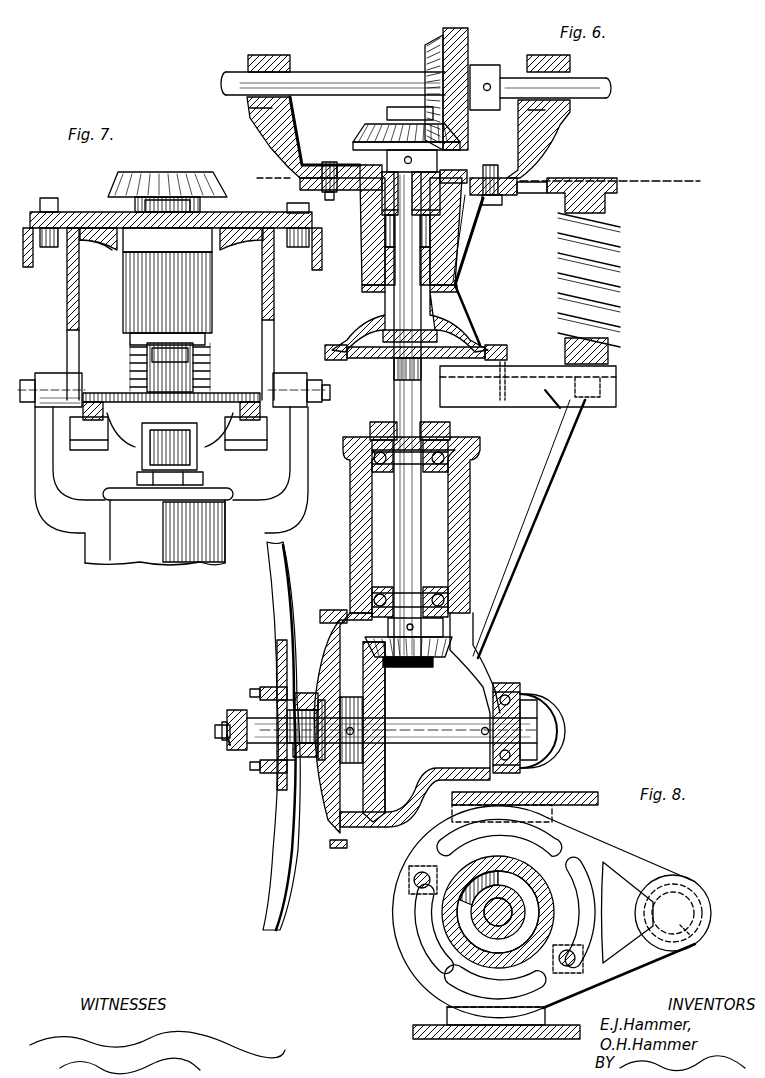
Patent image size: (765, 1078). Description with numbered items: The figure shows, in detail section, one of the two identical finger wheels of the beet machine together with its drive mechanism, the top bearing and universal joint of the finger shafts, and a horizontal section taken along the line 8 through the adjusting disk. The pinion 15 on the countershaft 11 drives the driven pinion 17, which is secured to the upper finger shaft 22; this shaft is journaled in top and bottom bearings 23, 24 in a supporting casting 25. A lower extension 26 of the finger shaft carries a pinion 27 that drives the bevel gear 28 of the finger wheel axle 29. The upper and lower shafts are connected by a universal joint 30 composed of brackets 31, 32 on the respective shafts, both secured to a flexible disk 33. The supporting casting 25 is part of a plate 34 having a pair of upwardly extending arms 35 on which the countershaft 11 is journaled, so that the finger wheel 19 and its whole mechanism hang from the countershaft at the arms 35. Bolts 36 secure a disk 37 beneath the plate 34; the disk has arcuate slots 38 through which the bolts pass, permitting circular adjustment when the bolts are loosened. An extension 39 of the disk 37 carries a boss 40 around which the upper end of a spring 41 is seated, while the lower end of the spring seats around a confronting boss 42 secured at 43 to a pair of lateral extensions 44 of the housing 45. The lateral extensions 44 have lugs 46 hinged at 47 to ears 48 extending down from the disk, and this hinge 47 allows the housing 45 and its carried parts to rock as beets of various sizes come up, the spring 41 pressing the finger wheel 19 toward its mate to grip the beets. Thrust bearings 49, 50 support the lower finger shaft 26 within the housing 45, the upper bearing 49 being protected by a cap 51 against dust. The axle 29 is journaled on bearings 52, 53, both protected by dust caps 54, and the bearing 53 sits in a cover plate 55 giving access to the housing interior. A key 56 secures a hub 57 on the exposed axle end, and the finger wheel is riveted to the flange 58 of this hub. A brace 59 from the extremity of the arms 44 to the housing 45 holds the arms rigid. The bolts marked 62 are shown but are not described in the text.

In FIG. 6, the section line 8— 8 is at (477, 180).
In FIG. 6, the countershaft 11 is at (322, 80).
In FIG. 6, the pinion 15 is at (455, 48).
In FIG. 6, the driven pinion 17 is at (368, 135).
In FIG. 7, the driven pinion 17 is at (158, 172).
In FIG. 6, the finger wheel 19 is at (268, 892).
In FIG. 6, the upper finger shaft 22 is at (365, 265).
In FIG. 8, the upper finger shaft 22 is at (480, 930).
In FIG. 6, the top bearing 23 is at (384, 210).
In FIG. 8, the top bearing 23 is at (490, 925).
In FIG. 7, the top bearing 23 is at (140, 205).
In FIG. 6, the bottom bearing 24 is at (385, 283).
In FIG. 6, the supporting casting 25 is at (450, 202).
In FIG. 8, the supporting casting 25 is at (470, 928).
In FIG. 7, the supporting casting 25 is at (135, 292).
In FIG. 6, the lower extension of the finger shaft 26 is at (392, 535).
In FIG. 6, the pinion 27 is at (455, 648).
In FIG. 6, the bevel gear 28 is at (362, 810).
In FIG. 6, the finger wheel axle 29 is at (420, 738).
In FIG. 6, the universal joint 30 is at (395, 345).
In FIG. 7, the universal joint 30 is at (222, 395).
In FIG. 6, the bracket 31 is at (370, 320).
In FIG. 7, the bracket 31 is at (132, 355).
In FIG. 6, the bracket 32 is at (393, 372).
In FIG. 7, the bracket 32 is at (143, 455).
In FIG. 6, the flexible disk 33 is at (383, 350).
In FIG. 7, the flexible disk 33 is at (125, 395).
In FIG. 6, the plate 34 is at (462, 178).
In FIG. 7, the plate 34 is at (90, 214).
In FIG. 6, the upwardly extending arms 35 is at (262, 128).
In FIG. 6, the bolts 36 is at (330, 162).
In FIG. 8, the bolts 36 is at (408, 878).
In FIG. 6, the disk 37 is at (302, 184).
In FIG. 8, the disk 37 is at (442, 930).
In FIG. 7, the disk 37 is at (80, 255).
In FIG. 8, the arcuate slots 38 is at (565, 905).
In FIG. 8, the extension of the disk 39 is at (640, 868).
In FIG. 6, the boss 40 is at (608, 204).
In FIG. 8, the boss 40 is at (708, 892).
In FIG. 6, the spring 41 is at (612, 283).
In FIG. 8, the spring 41 is at (708, 947).
In FIG. 7, the spring 41 is at (205, 350).
In FIG. 6, the confronting boss 42 is at (610, 345).
In FIG. 7, the confronting boss 42 is at (200, 370).
In FIG. 6, the securing point 43 is at (612, 400).
In FIG. 6, the lateral extensions 44 is at (555, 405).
In FIG. 7, the lateral extensions 44 is at (88, 445).
In FIG. 6, the housing 45 is at (468, 530).
In FIG. 7, the housing 45 is at (158, 560).
In FIG. 6, the lugs 46 is at (478, 345).
In FIG. 7, the lugs 46 is at (45, 373).
In FIG. 6, the hinge 47 is at (450, 335).
In FIG. 7, the hinge 47 is at (325, 403).
In FIG. 6, the ears 48 is at (400, 850).
In FIG. 8, the ears 48 is at (450, 1040).
In FIG. 7, the ears 48 is at (67, 316).
In FIG. 6, the upper bearing 49 is at (478, 242).
In FIG. 6, the lower bearing 50 is at (450, 616).
In FIG. 6, the cap 51 is at (450, 428).
In FIG. 6, the bearing 52 is at (525, 690).
In FIG. 6, the bearing 53 is at (318, 742).
In FIG. 6, the dust caps 54 is at (260, 692).
In FIG. 6, the cover plate 55 is at (318, 760).
In FIG. 6, the key 56 is at (220, 735).
In FIG. 6, the hub 57 is at (250, 748).
In FIG. 6, the flange 58 is at (275, 775).
In FIG. 6, the brace 59 is at (529, 529).
In FIG. 7, the bolt 62 is at (50, 198).